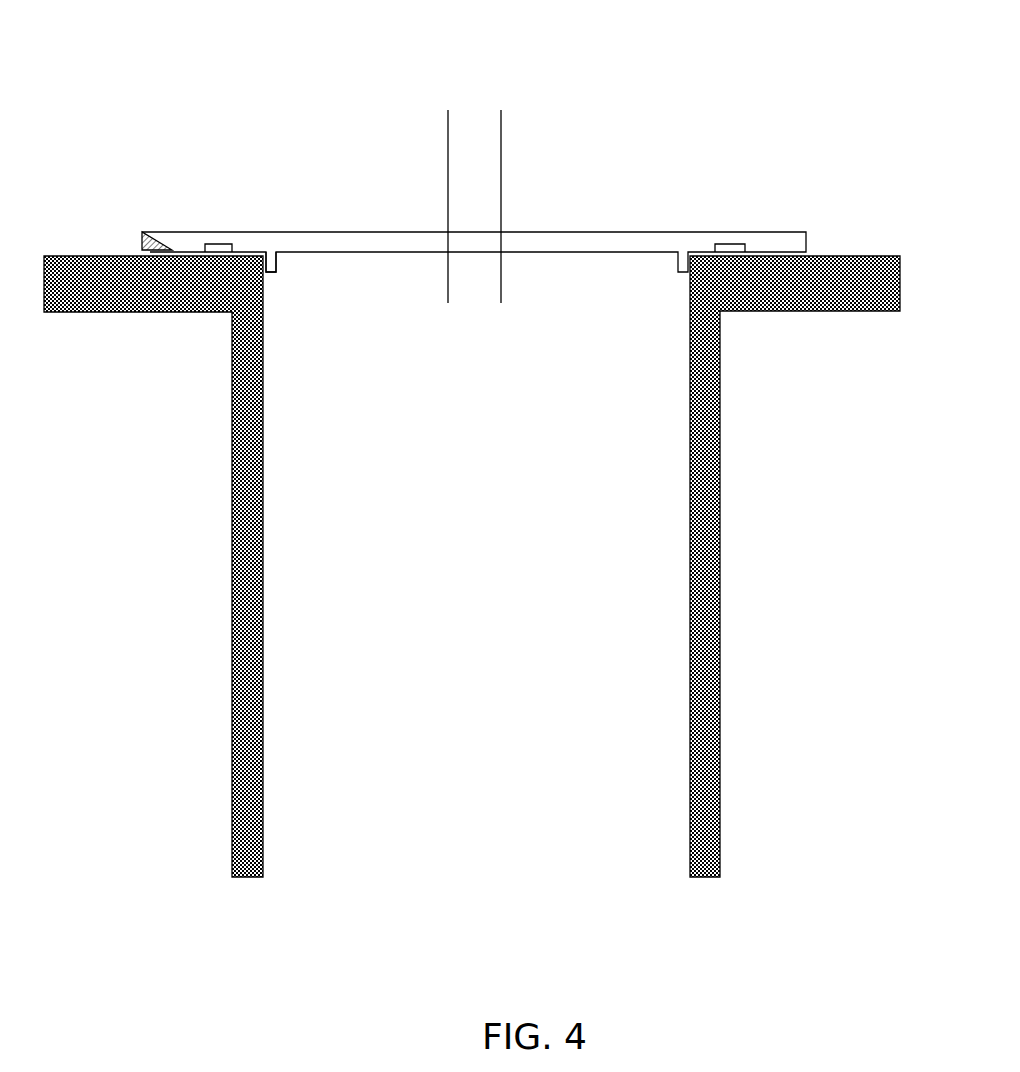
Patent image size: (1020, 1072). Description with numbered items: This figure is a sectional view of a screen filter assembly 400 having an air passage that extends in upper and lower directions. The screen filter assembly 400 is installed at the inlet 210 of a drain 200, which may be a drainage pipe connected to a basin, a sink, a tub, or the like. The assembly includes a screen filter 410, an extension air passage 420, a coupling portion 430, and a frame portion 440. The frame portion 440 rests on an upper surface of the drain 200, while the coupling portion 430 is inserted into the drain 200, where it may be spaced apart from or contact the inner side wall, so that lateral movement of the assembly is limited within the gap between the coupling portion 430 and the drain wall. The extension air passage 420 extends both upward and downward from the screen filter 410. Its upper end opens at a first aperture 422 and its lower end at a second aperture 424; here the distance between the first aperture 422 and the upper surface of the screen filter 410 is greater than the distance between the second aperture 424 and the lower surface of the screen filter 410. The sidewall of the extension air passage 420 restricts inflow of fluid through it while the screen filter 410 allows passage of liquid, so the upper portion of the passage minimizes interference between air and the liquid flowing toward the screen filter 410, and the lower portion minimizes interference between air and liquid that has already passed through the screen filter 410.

The drain 200 is at (722, 605).
The inlet 210 is at (686, 288).
The screen filter assembly 400 is at (319, 96).
The screen filter 410 is at (596, 222).
The extension air passage 420 is at (502, 148).
The first aperture 422 is at (484, 111).
The second aperture 424 is at (466, 311).
The coupling portion 430 is at (277, 260).
The frame portion 440 is at (185, 222).